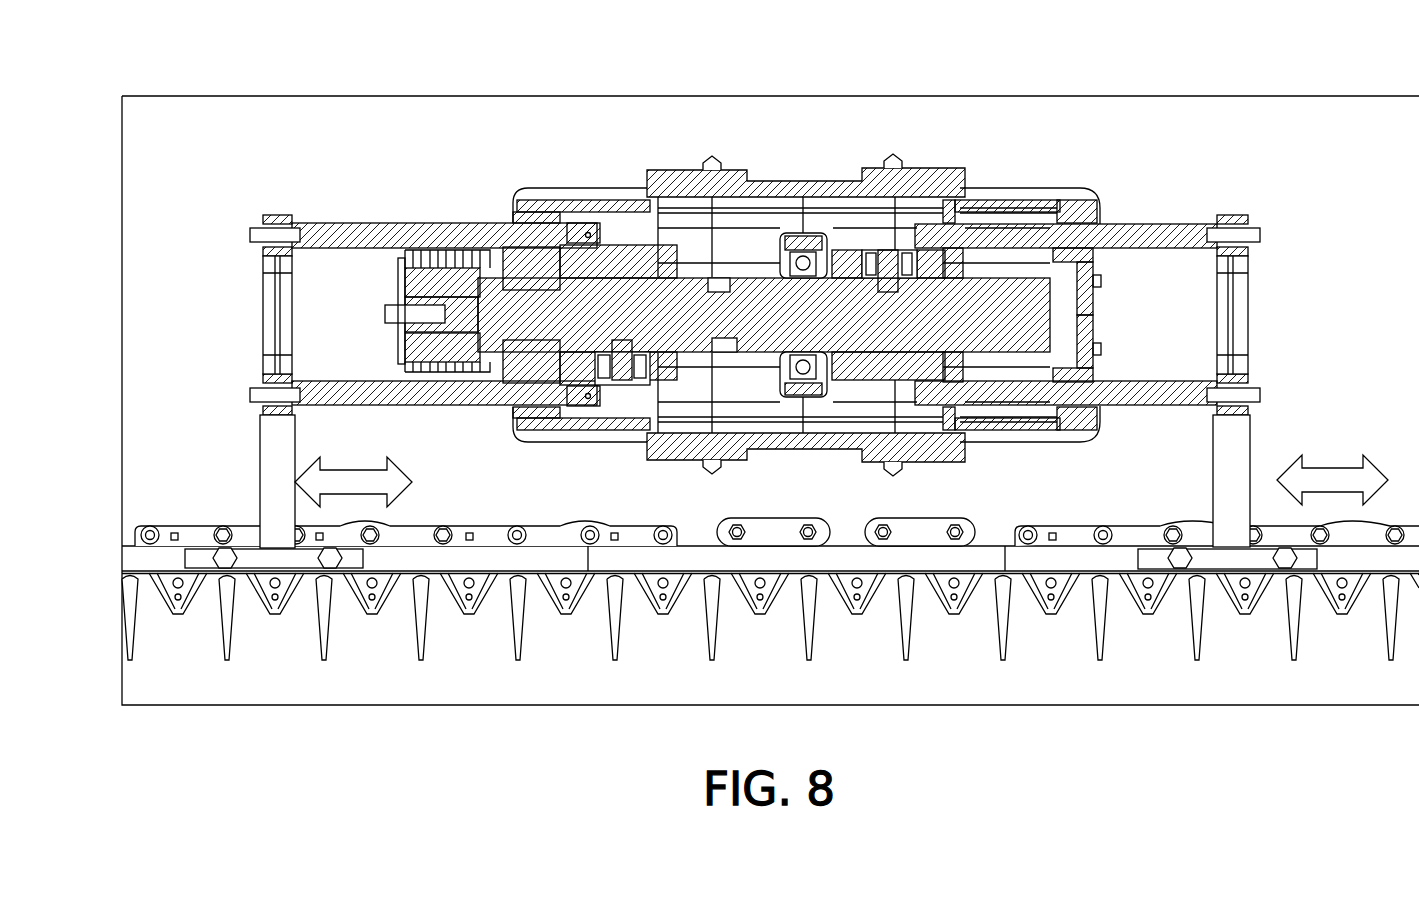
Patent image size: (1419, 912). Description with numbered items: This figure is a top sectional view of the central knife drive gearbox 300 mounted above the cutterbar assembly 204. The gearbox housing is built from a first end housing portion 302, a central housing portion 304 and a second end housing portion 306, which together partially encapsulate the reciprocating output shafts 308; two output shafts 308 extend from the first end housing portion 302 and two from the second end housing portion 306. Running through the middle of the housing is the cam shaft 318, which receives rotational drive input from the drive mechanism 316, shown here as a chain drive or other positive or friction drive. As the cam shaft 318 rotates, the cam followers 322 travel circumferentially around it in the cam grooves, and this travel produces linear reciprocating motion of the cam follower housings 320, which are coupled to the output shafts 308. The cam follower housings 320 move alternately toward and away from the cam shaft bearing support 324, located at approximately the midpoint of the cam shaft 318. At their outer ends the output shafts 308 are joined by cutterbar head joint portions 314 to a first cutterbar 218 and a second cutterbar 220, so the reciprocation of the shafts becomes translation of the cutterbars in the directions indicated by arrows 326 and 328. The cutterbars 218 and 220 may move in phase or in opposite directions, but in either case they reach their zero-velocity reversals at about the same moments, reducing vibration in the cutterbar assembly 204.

The cutterbar assembly 204 is at (770, 652).
The first cutterbar 218 is at (492, 552).
The second cutterbar 220 is at (973, 553).
The central knife drive gearbox 300 is at (762, 288).
The first end housing portion 302 is at (597, 190).
The central housing portion 304 is at (788, 180).
The second end housing portion 306 is at (1022, 185).
The reciprocating output shaft 308 is at (358, 223).
The cutterbar head joint portion 314 is at (260, 447).
The drive mechanism 316 is at (448, 267).
The cam shaft 318 is at (768, 278).
The cam follower housing 320 is at (582, 220).
The cam follower 322 is at (888, 252).
The cam shaft bearing support 324 is at (803, 265).
The arrow indicating linear motion 326 is at (338, 470).
The arrow indicating linear motion 328 is at (1328, 468).